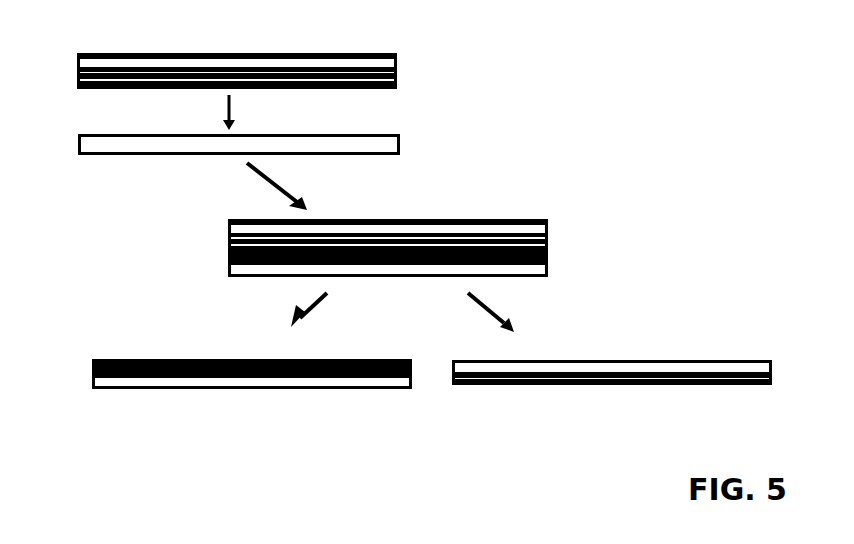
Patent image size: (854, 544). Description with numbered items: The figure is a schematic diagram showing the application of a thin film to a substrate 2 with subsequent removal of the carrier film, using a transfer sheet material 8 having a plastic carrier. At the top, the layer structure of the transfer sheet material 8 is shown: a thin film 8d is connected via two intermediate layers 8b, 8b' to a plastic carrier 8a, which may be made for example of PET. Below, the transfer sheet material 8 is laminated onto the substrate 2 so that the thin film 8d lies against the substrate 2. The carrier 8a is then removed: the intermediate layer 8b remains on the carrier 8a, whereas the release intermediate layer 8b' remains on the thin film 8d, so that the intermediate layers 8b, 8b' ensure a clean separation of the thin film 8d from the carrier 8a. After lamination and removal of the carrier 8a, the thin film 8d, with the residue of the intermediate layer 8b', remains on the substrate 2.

The substrate 2 is at (385, 148).
The transfer sheet material 8 is at (530, 13).
The plastic carrier 8a is at (397, 57).
The intermediate layer 8b is at (424, 233).
The intermediate layer (release) 8b' is at (344, 219).
The thin film 8d is at (397, 84).